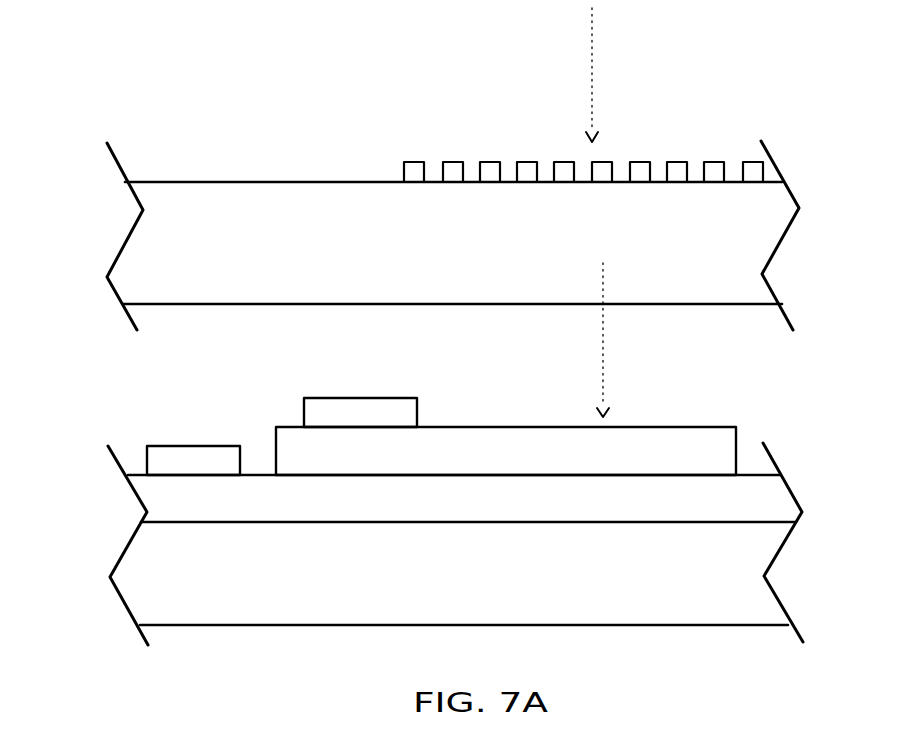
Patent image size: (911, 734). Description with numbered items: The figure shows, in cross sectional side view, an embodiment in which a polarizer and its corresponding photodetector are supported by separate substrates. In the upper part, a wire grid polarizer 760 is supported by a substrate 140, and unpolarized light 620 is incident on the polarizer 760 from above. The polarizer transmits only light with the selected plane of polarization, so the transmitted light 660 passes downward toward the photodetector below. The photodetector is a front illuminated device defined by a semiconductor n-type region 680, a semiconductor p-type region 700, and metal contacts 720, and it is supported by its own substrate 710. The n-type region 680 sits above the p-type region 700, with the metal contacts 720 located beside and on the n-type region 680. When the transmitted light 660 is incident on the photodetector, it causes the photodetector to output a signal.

The substrate 140 is at (453, 235).
The wire grid polarizer 760 is at (490, 172).
The unpolarized light 620 is at (619, 75).
The transmitted light 660 is at (631, 340).
The semiconductor n-type region 680 is at (652, 445).
The metal contacts 720 is at (323, 417).
The semiconductor p-type region 700 is at (773, 500).
The substrate 710 is at (455, 544).